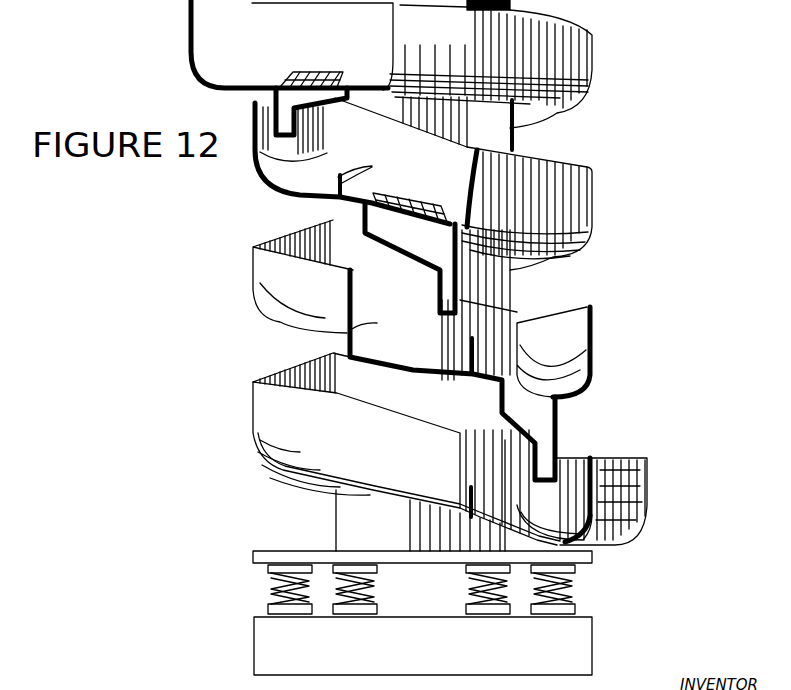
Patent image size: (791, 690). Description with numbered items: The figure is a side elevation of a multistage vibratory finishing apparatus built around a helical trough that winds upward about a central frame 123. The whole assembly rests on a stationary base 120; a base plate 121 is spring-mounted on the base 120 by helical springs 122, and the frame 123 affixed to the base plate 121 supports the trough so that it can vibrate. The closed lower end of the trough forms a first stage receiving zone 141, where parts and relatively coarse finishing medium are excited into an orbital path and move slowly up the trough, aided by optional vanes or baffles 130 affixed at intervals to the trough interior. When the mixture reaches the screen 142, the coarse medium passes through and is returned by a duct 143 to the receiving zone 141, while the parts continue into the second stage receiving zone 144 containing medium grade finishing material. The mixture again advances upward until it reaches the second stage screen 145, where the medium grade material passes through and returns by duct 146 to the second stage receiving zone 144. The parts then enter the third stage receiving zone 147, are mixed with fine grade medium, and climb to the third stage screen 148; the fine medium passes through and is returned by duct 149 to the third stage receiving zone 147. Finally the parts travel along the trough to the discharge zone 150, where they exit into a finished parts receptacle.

The stationary base 120 is at (272, 636).
The base plate 121 is at (256, 557).
The helical springs 122 is at (266, 590).
The frame 123 is at (336, 512).
The vanes or baffles 130 is at (554, 523).
The first stage receiving zone 141 is at (630, 490).
The screen 142 is at (593, 358).
The duct 143 is at (557, 425).
The second stage receiving zone 144 is at (433, 350).
The second stage screen 145 is at (432, 176).
The duct 146 is at (513, 270).
The third stage receiving zone 147 is at (333, 182).
The third stage screen 148 is at (318, 75).
The duct 149 is at (292, 127).
The discharge zone 150 is at (188, 57).